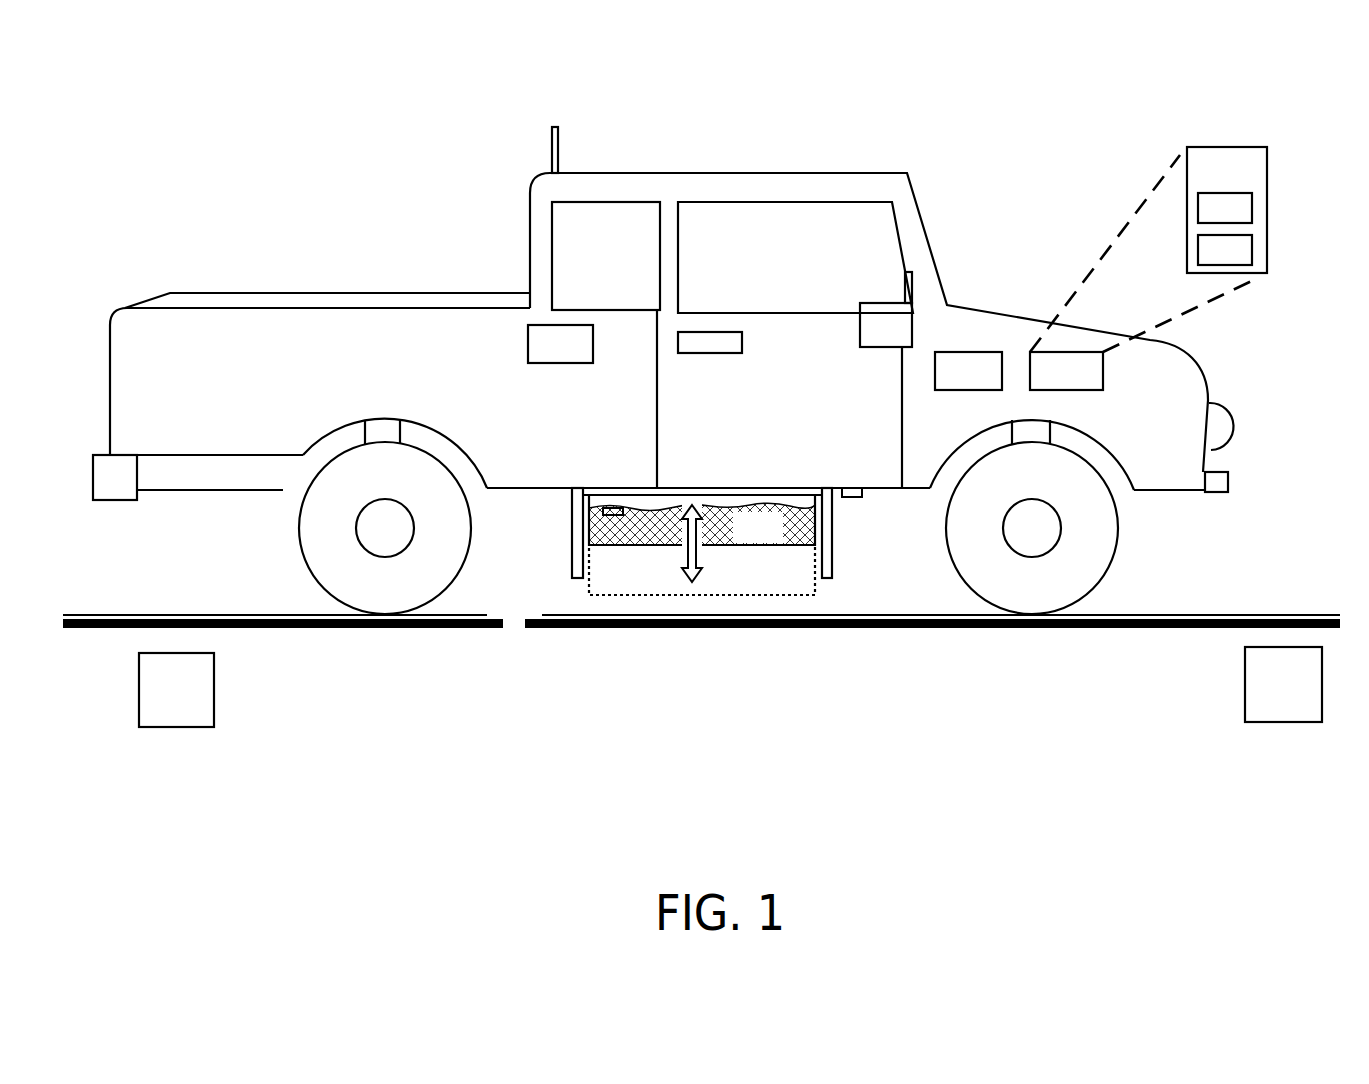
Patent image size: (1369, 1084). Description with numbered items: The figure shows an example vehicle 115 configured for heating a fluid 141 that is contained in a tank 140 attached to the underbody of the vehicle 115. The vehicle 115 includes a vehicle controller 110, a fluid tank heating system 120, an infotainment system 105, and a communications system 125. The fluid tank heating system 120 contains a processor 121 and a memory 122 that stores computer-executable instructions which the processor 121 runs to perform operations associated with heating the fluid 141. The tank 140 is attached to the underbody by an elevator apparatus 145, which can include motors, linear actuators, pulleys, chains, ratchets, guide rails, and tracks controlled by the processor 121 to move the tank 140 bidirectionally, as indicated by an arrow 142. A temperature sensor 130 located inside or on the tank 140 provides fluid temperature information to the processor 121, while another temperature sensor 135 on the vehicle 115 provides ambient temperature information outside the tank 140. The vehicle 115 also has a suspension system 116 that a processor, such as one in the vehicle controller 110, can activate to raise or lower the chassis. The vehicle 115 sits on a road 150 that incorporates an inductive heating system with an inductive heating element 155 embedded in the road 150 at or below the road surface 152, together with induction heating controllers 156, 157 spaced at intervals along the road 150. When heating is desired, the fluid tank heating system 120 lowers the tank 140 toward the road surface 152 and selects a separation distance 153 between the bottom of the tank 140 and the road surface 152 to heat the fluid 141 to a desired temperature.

The infotainment system 105 is at (907, 272).
The vehicle controller 110 is at (968, 371).
The vehicle 115 is at (1056, 128).
The suspension system 116 is at (401, 433).
The fluid tank heating system 120 is at (1148, 268).
The processor 121 is at (1225, 208).
The memory 122 is at (1225, 250).
The communications system 125 is at (560, 344).
The temperature sensor 130 is at (613, 507).
The temperature sensor 135 is at (852, 497).
The tank 140 is at (702, 519).
The fluid 141 is at (702, 524).
The arrow 142 is at (703, 557).
The elevator apparatus 145 is at (566, 500).
The road 150 is at (701, 587).
The road surface 152 is at (1185, 614).
The separation distance 153 is at (514, 565).
The inductive heating element 155 is at (705, 630).
The induction heating controller 156 is at (187, 628).
The induction heating controller 157 is at (1292, 628).